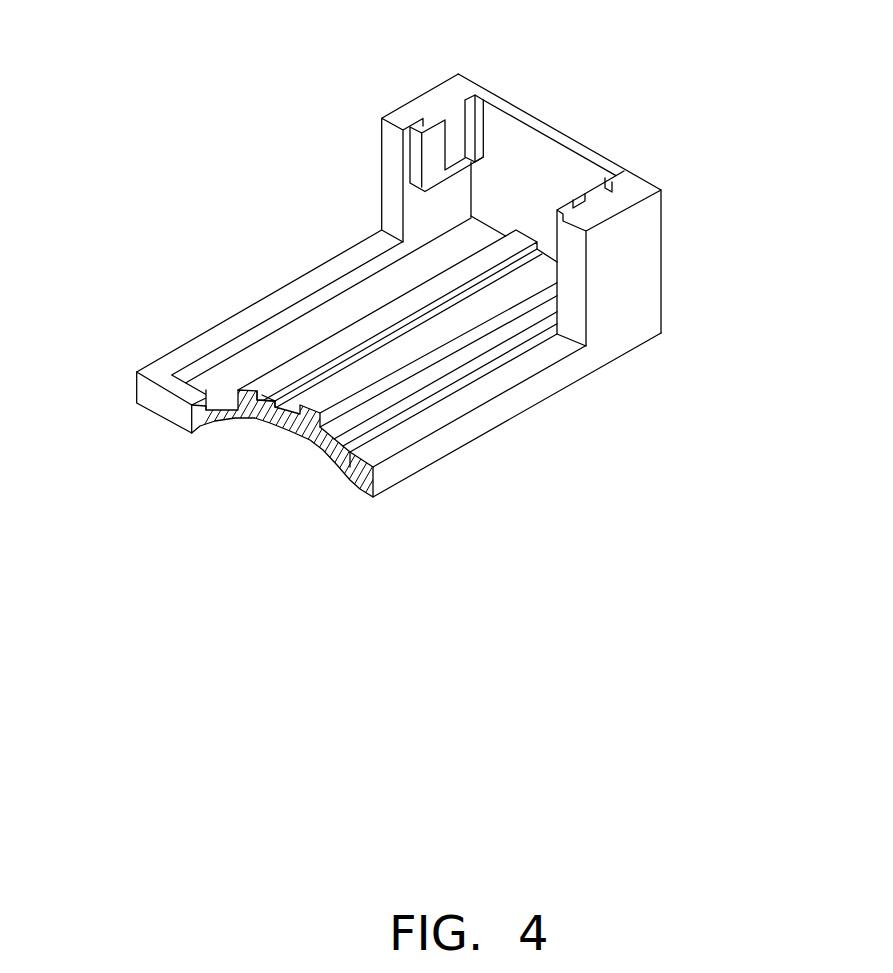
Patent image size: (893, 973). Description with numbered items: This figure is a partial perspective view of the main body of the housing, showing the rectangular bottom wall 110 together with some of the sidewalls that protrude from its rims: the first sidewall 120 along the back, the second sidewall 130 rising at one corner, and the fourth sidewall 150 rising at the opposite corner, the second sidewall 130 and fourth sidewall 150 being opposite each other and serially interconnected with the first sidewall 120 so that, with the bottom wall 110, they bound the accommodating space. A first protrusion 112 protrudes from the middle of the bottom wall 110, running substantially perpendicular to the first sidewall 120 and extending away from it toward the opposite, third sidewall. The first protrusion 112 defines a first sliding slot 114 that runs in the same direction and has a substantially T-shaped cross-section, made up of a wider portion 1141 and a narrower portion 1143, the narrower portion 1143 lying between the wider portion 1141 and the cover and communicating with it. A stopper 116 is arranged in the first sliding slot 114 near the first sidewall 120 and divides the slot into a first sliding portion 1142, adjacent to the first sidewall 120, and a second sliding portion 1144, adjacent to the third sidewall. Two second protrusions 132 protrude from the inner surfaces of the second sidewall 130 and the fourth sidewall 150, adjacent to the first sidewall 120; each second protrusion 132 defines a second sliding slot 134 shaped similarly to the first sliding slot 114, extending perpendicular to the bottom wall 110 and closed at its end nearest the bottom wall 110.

The bottom wall 110 is at (220, 423).
The first protrusion 112 is at (287, 377).
The first sliding slot 114 is at (286, 408).
The wider portion 1141 is at (265, 416).
The first sliding portion 1142 is at (513, 272).
The narrower portion 1143 is at (277, 397).
The second sliding portion 1144 is at (370, 357).
The stopper 116 is at (462, 303).
The first sidewall 120 is at (568, 142).
The second sidewall 130 is at (399, 121).
The second protrusion 132 is at (432, 150).
The second sliding slot 134 is at (455, 117).
The fourth sidewall 150 is at (613, 205).